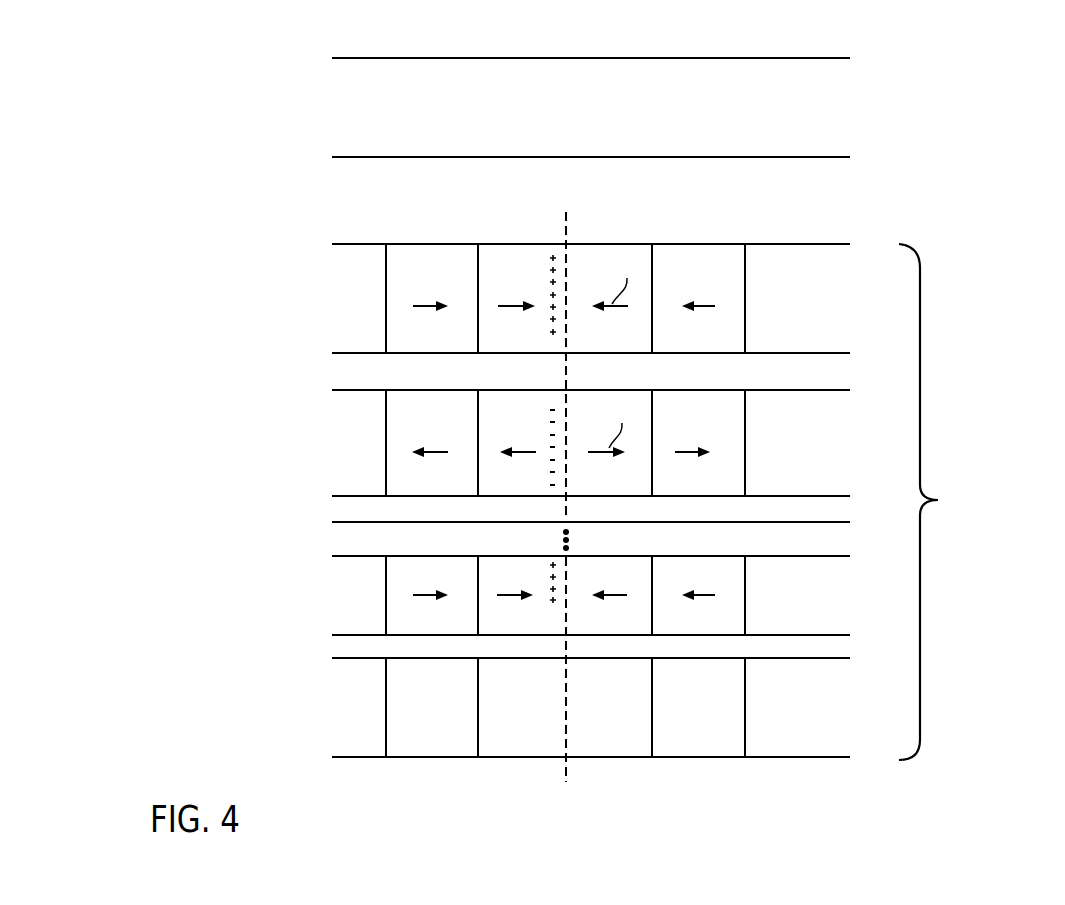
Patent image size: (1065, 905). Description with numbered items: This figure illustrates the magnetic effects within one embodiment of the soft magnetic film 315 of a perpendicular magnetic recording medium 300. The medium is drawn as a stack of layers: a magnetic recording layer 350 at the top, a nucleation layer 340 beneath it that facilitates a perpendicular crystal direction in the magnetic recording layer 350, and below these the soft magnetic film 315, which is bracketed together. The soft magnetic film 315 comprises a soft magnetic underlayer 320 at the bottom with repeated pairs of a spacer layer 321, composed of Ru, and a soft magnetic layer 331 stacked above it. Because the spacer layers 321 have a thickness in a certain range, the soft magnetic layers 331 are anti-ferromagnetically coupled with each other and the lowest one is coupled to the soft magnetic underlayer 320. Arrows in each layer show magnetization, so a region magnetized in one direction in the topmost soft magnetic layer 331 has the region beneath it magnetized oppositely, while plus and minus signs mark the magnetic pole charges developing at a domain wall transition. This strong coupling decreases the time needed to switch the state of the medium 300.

The perpendicular magnetic recording disk 300 is at (943, 82).
The magnetic recording layer 350 is at (470, 121).
The nucleation layer 340 is at (470, 215).
The soft magnetic layer 331 is at (618, 439).
The spacer layer 321 is at (617, 514).
The soft magnetic underlayer 320 is at (882, 716).
The soft magnetic film 315 is at (967, 502).